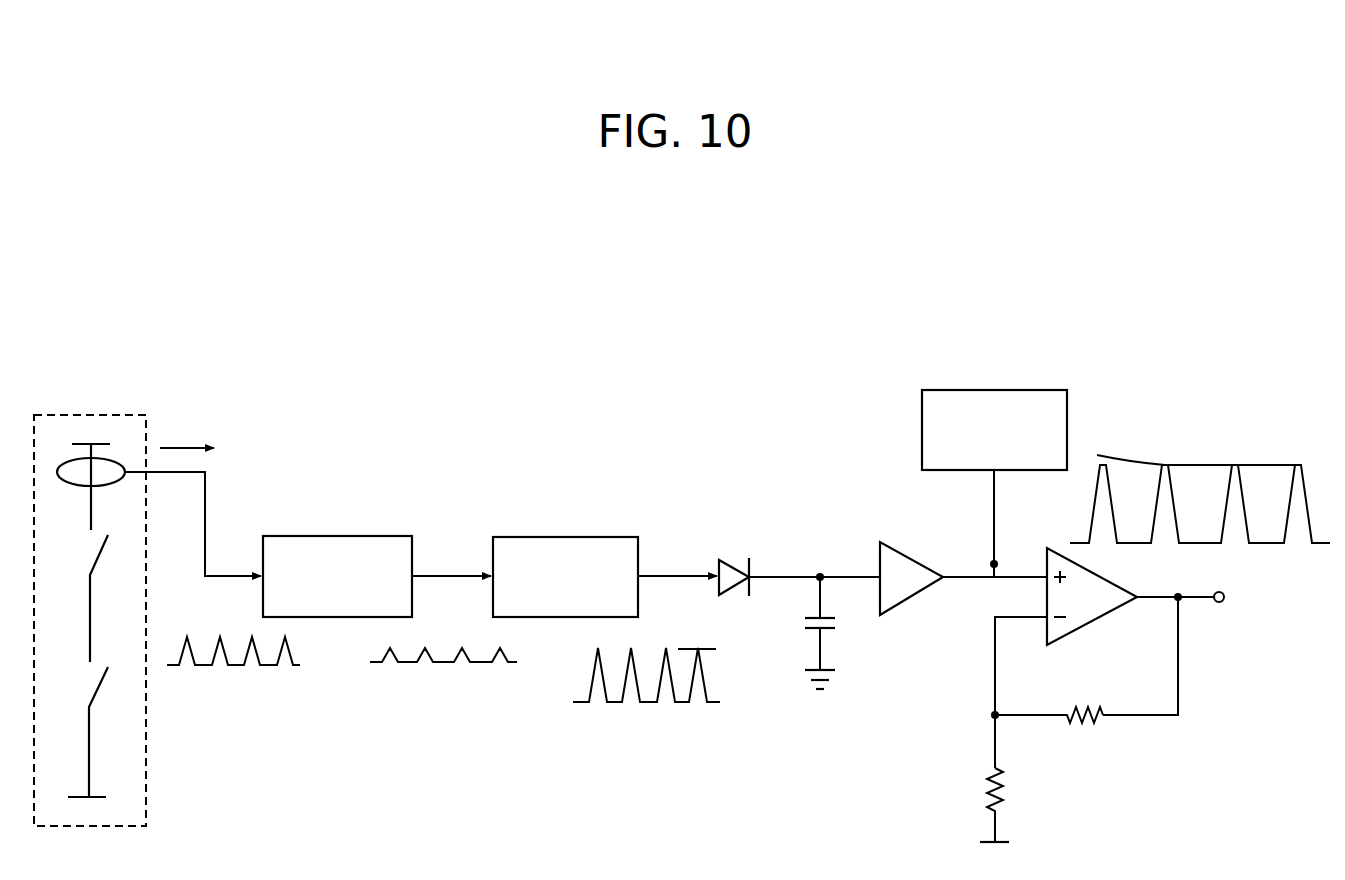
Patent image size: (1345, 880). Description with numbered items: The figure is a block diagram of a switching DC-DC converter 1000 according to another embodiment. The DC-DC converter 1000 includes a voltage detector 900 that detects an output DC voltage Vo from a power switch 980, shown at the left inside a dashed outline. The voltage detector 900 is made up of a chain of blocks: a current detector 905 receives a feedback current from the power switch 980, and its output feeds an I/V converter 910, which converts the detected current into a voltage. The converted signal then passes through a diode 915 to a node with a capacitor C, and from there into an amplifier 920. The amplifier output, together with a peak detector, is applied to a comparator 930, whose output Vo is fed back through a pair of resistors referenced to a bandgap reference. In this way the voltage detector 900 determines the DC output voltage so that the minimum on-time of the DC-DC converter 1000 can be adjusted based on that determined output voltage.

The switching DC-DC converter 1000 is at (582, 302).
The power switch 980 is at (92, 415).
The current detector 905 is at (335, 536).
The I/V converter 910 is at (560, 537).
The voltage detector 900 is at (680, 490).
The diode 915 is at (733, 560).
The amplifier 920 is at (913, 595).
The comparator 930 is at (1093, 622).